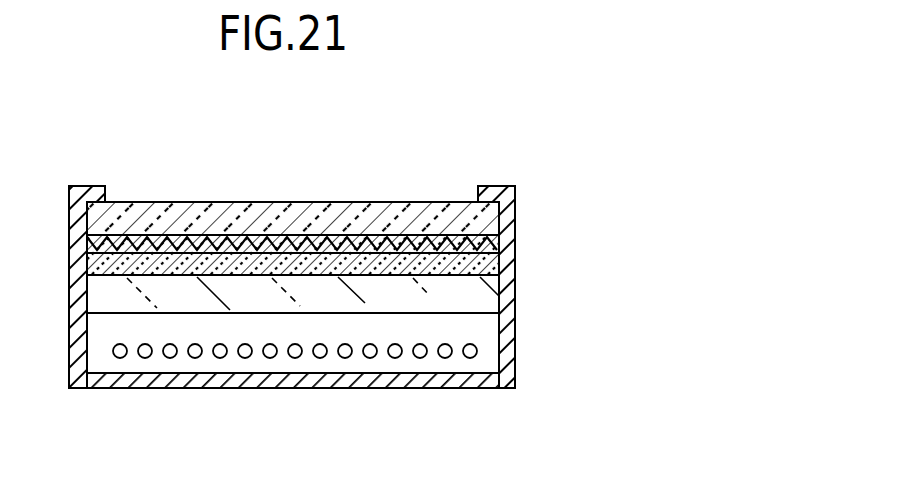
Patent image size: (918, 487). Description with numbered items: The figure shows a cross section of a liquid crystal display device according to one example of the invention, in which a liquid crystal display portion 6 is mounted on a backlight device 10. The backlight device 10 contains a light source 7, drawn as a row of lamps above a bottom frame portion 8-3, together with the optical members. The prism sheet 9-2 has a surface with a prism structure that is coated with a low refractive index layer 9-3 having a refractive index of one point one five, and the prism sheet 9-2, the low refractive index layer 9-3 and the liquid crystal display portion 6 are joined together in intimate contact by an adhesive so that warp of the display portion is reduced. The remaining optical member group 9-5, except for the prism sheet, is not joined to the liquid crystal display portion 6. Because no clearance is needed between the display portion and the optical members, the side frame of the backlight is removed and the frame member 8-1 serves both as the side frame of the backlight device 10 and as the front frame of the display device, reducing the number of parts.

The liquid crystal display portion 6 is at (314, 202).
The light source 7 is at (344, 358).
The frame member 8-1 is at (492, 186).
The frame bottom portion 8-3 is at (463, 388).
The prism sheet 9-2 is at (168, 272).
The low refractive index layer 9-3 is at (212, 243).
The optical member group 9-5 is at (271, 292).
The backlight device 10 is at (537, 235).